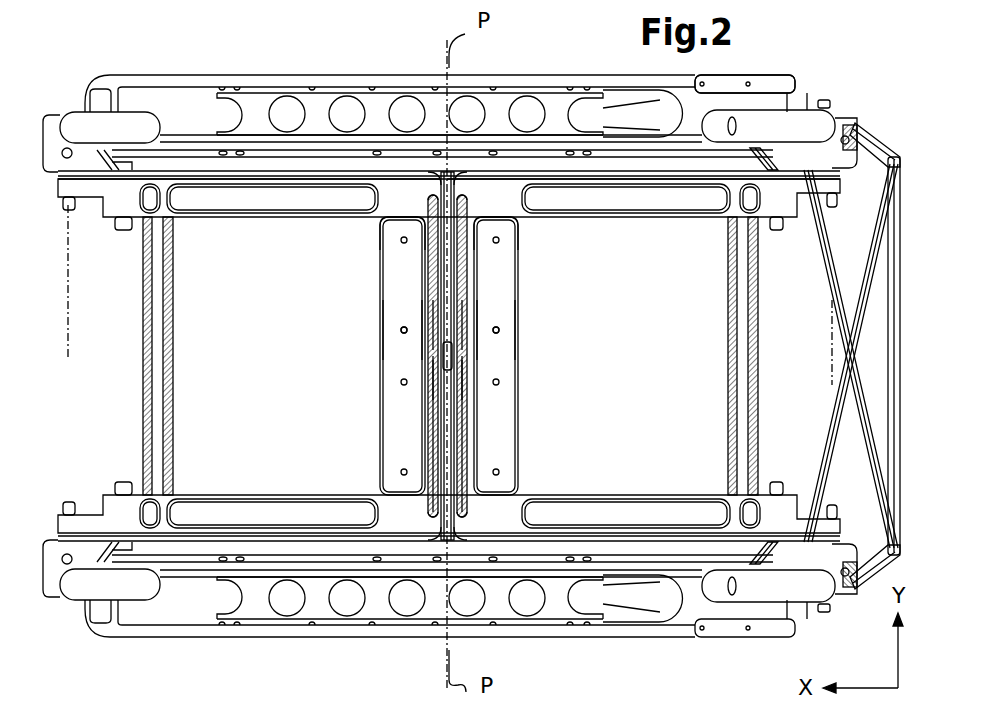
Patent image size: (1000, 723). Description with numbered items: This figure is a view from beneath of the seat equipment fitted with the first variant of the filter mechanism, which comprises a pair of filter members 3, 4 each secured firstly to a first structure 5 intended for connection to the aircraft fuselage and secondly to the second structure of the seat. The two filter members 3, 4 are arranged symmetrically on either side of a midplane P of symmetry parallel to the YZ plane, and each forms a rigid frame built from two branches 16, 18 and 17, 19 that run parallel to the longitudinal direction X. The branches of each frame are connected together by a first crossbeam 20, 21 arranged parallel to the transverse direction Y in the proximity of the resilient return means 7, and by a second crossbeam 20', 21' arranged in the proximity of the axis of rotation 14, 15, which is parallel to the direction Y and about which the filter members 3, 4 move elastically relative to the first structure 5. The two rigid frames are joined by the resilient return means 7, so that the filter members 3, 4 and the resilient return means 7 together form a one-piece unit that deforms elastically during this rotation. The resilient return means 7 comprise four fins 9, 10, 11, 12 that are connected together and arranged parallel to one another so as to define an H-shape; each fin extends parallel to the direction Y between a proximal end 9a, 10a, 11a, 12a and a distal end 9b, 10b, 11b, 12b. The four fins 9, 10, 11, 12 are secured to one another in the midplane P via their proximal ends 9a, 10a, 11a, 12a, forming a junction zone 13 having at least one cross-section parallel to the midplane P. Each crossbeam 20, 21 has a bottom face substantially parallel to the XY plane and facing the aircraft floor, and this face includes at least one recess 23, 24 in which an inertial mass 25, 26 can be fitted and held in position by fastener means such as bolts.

The filter member 3 is at (673, 226).
The filter member 4 is at (222, 226).
The first structure 5 is at (803, 118).
The resilient return means 7 is at (446, 176).
The fin 9 is at (475, 262).
The proximal end 9a is at (470, 316).
The distal end 9b is at (452, 176).
The fin 10 is at (470, 413).
The proximal end 10a is at (452, 376).
The distal end 10b is at (462, 508).
The fin 11 is at (428, 261).
The proximal end 11a is at (426, 337).
The distal end 11b is at (437, 176).
The fin 12 is at (430, 412).
The proximal end 12a is at (428, 377).
The distal end 12b is at (434, 508).
The junction zone 13 is at (452, 353).
The axis of rotation 14 is at (832, 366).
The axis of rotation 15 is at (72, 319).
The branch 16 is at (640, 219).
The branch 17 is at (657, 512).
The branch 18 is at (254, 219).
The branch 19 is at (257, 517).
The first crossbeam 20 is at (548, 356).
The second crossbeam 20' is at (769, 356).
The first crossbeam 21 is at (357, 356).
The second crossbeam 21' is at (120, 356).
The recess 23 is at (522, 221).
The recess 24 is at (380, 219).
The inertial mass 25 is at (494, 301).
The inertial mass 26 is at (404, 302).